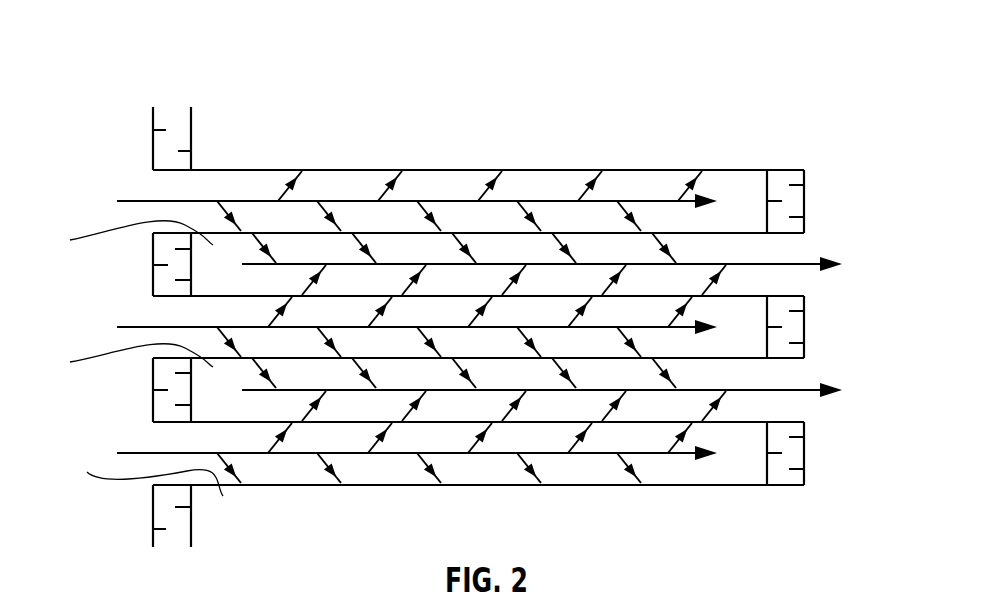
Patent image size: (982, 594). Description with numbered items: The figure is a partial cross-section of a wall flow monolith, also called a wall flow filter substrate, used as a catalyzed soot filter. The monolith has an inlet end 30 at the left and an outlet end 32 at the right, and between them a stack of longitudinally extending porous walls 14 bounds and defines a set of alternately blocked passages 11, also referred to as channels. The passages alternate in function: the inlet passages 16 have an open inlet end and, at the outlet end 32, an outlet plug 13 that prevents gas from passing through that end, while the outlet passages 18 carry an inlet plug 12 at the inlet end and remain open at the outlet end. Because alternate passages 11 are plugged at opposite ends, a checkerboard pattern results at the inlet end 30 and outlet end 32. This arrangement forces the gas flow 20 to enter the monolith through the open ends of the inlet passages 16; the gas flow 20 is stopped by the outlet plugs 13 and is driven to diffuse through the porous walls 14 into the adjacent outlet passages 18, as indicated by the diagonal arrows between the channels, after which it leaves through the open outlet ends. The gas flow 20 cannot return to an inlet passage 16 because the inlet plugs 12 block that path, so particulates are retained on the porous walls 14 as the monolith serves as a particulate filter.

The inlet end 30 is at (122, 84).
The outlet end 32 is at (838, 148).
The alternately blocked passages 11 is at (193, 203).
The inlet plug 12 is at (162, 147).
The outlet plug 13 is at (800, 206).
The porous wall 14 is at (473, 233).
The inlet passage 16 is at (177, 199).
The outlet passage 18 is at (798, 292).
The gas flow 20 is at (255, 203).